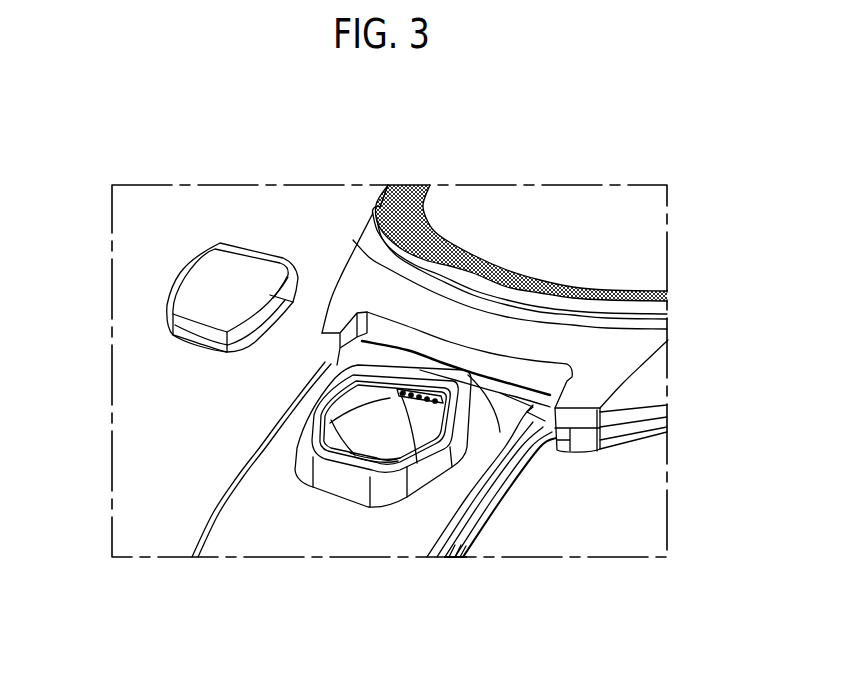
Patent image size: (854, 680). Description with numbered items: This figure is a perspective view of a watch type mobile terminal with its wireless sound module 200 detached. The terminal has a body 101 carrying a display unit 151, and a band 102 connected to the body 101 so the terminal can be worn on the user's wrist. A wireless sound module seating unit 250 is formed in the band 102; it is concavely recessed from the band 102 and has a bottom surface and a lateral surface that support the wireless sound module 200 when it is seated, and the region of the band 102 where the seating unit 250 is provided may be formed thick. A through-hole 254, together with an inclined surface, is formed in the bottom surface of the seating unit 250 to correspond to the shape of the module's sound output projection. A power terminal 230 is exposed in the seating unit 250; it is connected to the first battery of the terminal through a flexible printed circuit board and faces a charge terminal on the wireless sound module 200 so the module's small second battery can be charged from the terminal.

The body 101 is at (646, 393).
The display unit 151 is at (528, 213).
The band 102 is at (449, 540).
The wireless sound module 200 is at (192, 300).
The wireless sound module seating unit 250 is at (367, 418).
The through-hole 254 is at (357, 452).
The power terminal 230 is at (412, 395).